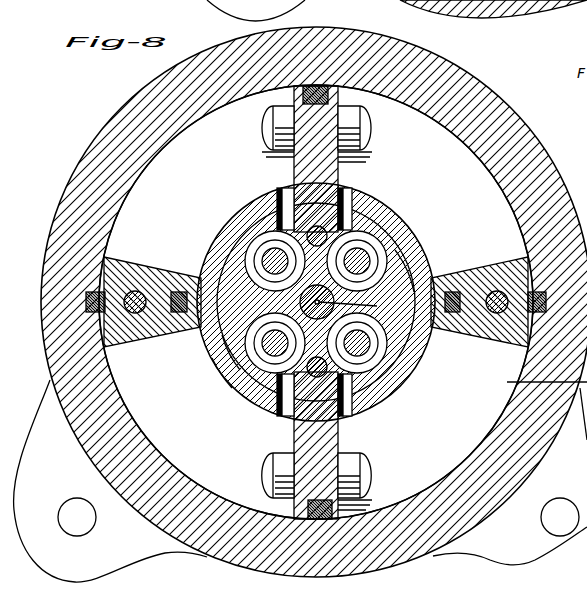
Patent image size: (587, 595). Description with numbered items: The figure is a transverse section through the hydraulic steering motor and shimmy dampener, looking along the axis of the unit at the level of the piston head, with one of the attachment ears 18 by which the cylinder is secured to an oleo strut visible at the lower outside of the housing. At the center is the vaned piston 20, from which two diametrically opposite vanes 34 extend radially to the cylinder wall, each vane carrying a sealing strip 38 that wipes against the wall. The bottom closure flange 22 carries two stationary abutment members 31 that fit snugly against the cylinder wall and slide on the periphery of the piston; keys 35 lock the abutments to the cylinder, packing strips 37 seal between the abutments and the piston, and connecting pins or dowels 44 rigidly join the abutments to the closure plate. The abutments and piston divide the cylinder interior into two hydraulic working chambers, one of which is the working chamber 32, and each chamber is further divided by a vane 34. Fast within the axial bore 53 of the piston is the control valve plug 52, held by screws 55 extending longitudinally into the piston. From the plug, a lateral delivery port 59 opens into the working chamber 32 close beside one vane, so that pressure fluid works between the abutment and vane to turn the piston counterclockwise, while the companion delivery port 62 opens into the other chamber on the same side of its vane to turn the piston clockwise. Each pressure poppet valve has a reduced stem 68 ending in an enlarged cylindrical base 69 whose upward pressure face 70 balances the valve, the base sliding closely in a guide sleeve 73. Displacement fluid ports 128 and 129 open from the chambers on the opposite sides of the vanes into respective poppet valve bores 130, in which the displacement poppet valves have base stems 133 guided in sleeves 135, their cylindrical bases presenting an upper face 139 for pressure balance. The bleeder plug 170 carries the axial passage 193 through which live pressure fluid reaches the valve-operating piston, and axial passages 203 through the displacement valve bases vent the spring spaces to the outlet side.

The attachment ear 18 is at (132, 547).
The vaned piston 20 is at (372, 355).
The bottom closure flange 22 is at (455, 179).
The stationary vane or abutment member 31 is at (172, 291).
The hydraulic working chamber 32 is at (500, 197).
The vane 34 is at (300, 158).
The key 35 is at (87, 297).
The packing or sealing strip 37 is at (455, 291).
The sealing or packing strip 38 is at (300, 511).
The connecting pin or dowel 44 is at (137, 292).
The control valve plug 52 is at (440, 260).
The axial bore 53 is at (345, 220).
The screw 55 is at (279, 222).
The lateral delivery port 59 is at (348, 213).
The lateral delivery port 62 is at (350, 412).
The base or stem 68 is at (360, 257).
The cylindrical base 69 is at (392, 246).
The pressure face 70 is at (378, 252).
The cylindrical guide sleeve 73 is at (386, 262).
The displacement fluid port 128 is at (284, 192).
The displacement fluid port 129 is at (284, 416).
The poppet valve bore 130 is at (247, 383).
The base stem portion 133 is at (265, 344).
The sleeve 135 is at (246, 262).
The upper face 139 is at (257, 382).
The air blow-off or bleeder plug 170 is at (262, 262).
The axial passage 193 is at (428, 343).
The axial passage 203 is at (270, 257).